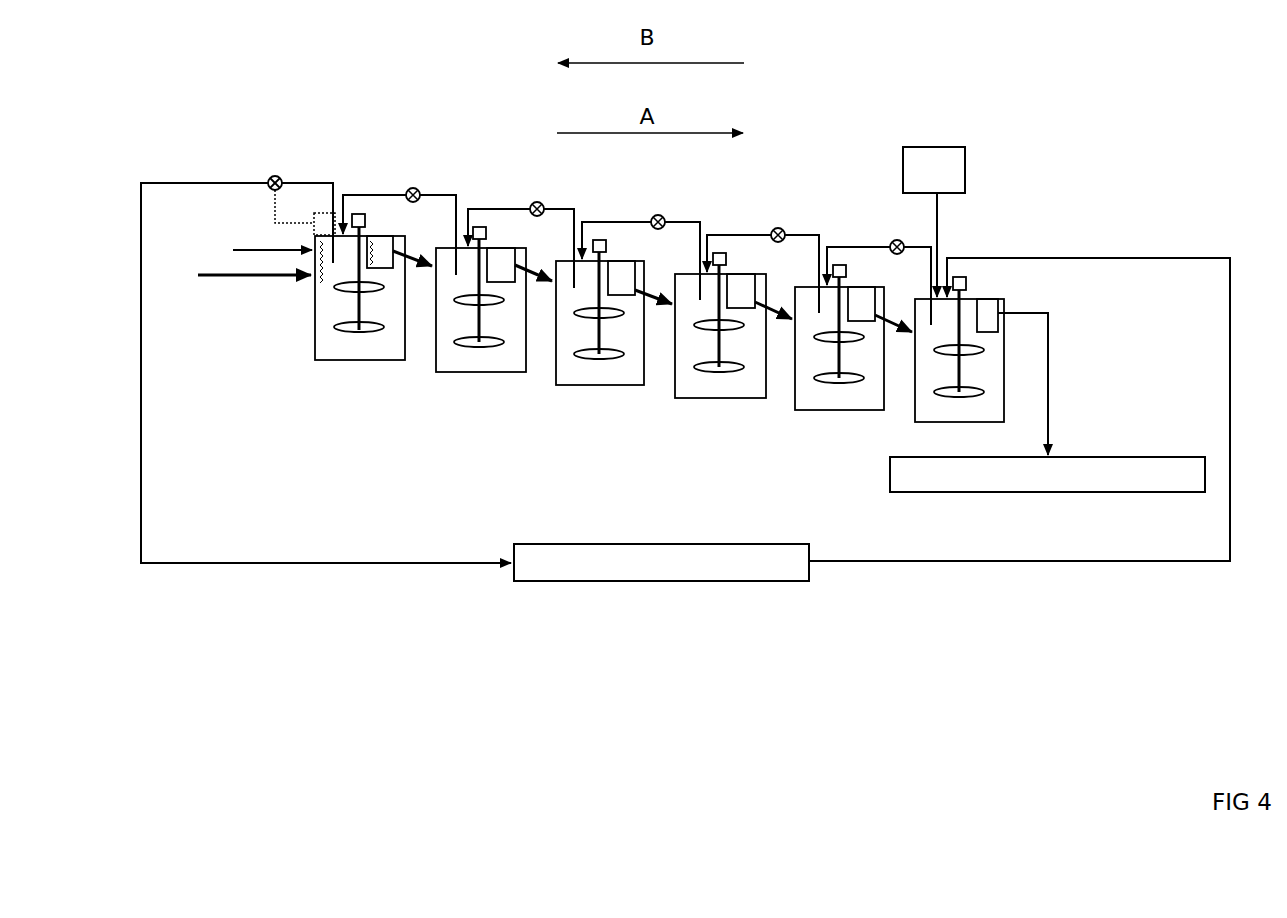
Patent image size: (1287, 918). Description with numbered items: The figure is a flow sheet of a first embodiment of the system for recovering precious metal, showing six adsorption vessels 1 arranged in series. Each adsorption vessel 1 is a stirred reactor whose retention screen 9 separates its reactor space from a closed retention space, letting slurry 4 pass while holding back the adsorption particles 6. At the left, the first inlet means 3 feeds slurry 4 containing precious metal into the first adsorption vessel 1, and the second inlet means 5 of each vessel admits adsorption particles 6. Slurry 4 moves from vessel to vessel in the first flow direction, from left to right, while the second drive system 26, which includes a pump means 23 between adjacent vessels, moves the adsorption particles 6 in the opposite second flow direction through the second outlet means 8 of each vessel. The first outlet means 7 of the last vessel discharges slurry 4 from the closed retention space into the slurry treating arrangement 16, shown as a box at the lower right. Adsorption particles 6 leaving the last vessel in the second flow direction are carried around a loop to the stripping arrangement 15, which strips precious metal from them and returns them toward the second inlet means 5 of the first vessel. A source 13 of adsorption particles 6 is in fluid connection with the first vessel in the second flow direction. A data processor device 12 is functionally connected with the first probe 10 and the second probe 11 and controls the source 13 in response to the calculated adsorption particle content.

The adsorption vessel 1 is at (371, 360).
The first inlet means 3 is at (276, 292).
The slurry 4 is at (232, 275).
The second inlet means 5 is at (997, 312).
The adsorption particles 6 is at (948, 231).
The first outlet means 7 is at (1000, 303).
The second outlet means 8 is at (343, 192).
The retention screen 9 is at (962, 297).
The first probe 10 is at (372, 242).
The second probe 11 is at (315, 247).
The data processor device 12 is at (323, 230).
The source of adsorption particles 13 is at (934, 222).
The stripping arrangement 15 is at (661, 562).
The slurry treating arrangement 16 is at (1047, 474).
The pump means 23 is at (273, 176).
The second drive system 26 is at (250, 171).